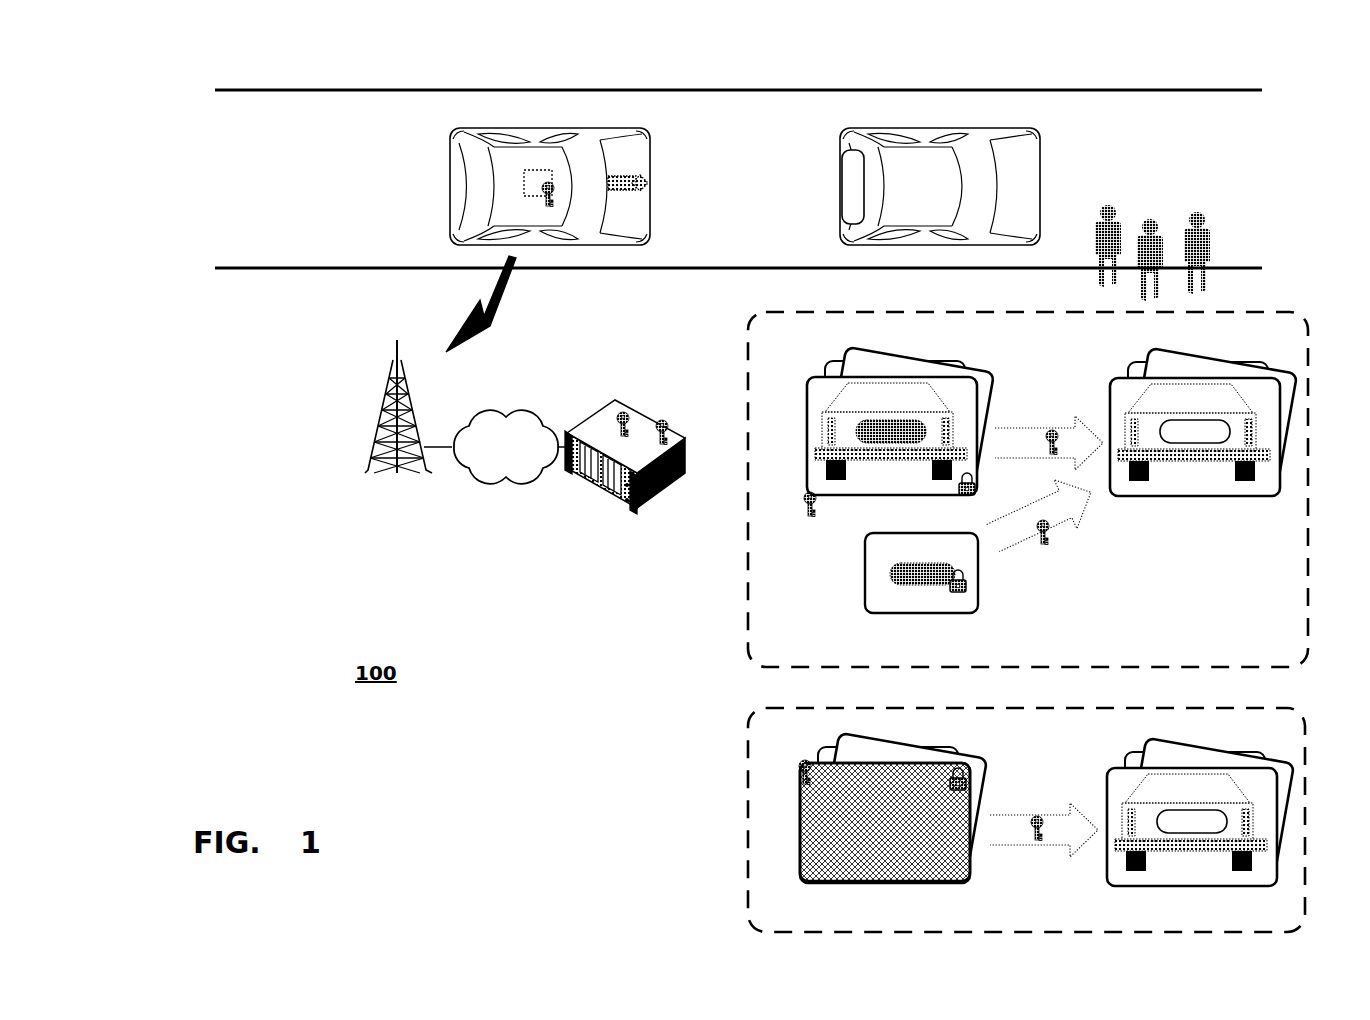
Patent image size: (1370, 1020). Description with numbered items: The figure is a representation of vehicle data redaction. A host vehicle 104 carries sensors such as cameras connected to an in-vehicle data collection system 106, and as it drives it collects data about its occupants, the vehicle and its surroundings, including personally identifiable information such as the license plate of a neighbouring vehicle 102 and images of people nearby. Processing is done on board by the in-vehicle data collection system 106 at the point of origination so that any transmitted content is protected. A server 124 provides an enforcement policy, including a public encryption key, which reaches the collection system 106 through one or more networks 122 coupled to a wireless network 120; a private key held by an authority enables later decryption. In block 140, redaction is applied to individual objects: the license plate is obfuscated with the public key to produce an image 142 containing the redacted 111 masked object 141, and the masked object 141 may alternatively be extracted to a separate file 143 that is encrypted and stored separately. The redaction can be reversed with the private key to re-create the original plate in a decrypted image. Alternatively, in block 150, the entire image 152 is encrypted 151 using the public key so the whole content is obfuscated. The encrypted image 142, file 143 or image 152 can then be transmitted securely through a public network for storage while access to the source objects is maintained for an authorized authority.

The vehicle 102 is at (988, 130).
The vehicle 104 is at (545, 128).
The in-vehicle data collection system 106 is at (523, 182).
The redacted 111 is at (897, 445).
The wireless network 120 is at (397, 478).
The networks 122 is at (506, 447).
The server 124 is at (583, 432).
The block 140 is at (748, 322).
The masked object 141 is at (898, 587).
The image 142 is at (875, 410).
The separate file 143 is at (899, 594).
The block 150 is at (748, 737).
The encrypted 151 is at (869, 830).
The image 152 is at (805, 837).